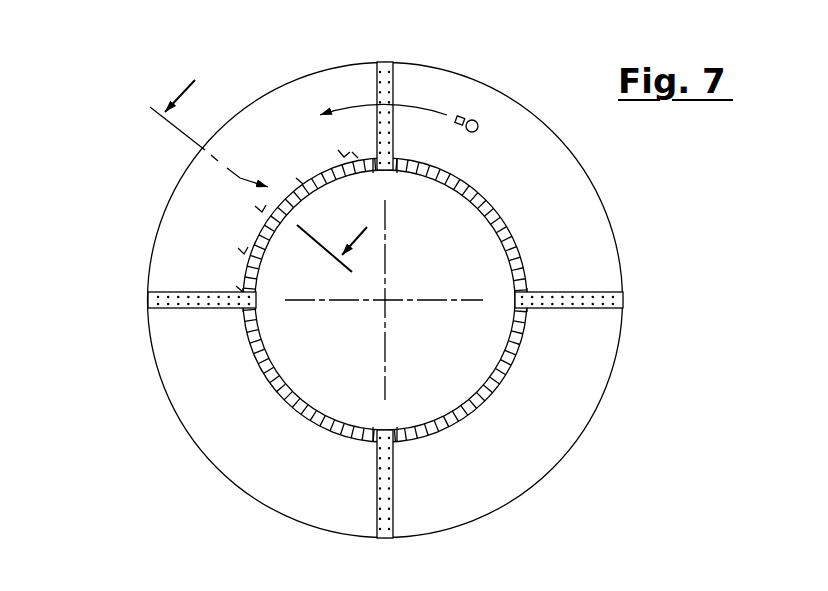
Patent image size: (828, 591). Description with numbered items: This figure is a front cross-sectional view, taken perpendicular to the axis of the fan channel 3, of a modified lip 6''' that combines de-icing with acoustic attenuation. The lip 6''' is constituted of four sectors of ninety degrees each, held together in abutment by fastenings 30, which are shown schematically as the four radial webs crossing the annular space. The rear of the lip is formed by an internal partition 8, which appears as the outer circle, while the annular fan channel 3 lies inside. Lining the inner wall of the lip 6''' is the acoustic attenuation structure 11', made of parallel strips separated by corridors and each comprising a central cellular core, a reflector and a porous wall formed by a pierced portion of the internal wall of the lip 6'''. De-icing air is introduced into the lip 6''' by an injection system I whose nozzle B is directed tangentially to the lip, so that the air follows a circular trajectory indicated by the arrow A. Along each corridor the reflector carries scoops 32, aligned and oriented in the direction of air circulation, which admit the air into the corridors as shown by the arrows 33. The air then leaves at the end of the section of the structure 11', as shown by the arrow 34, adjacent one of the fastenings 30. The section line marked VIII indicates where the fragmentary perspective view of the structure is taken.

The fan channel 3 is at (384, 300).
The lip 6''' is at (467, 294).
The internal partition 8 is at (524, 98).
The acoustic attenuation structure 11' is at (396, 321).
The fastenings 30 is at (386, 62).
The scoops 32 is at (342, 156).
The arrows 33 is at (303, 176).
The arrow 34 is at (234, 290).
The arrow A is at (362, 108).
The nozzle B is at (466, 117).
The injection system I is at (482, 111).
The section line VIII is at (251, 170).